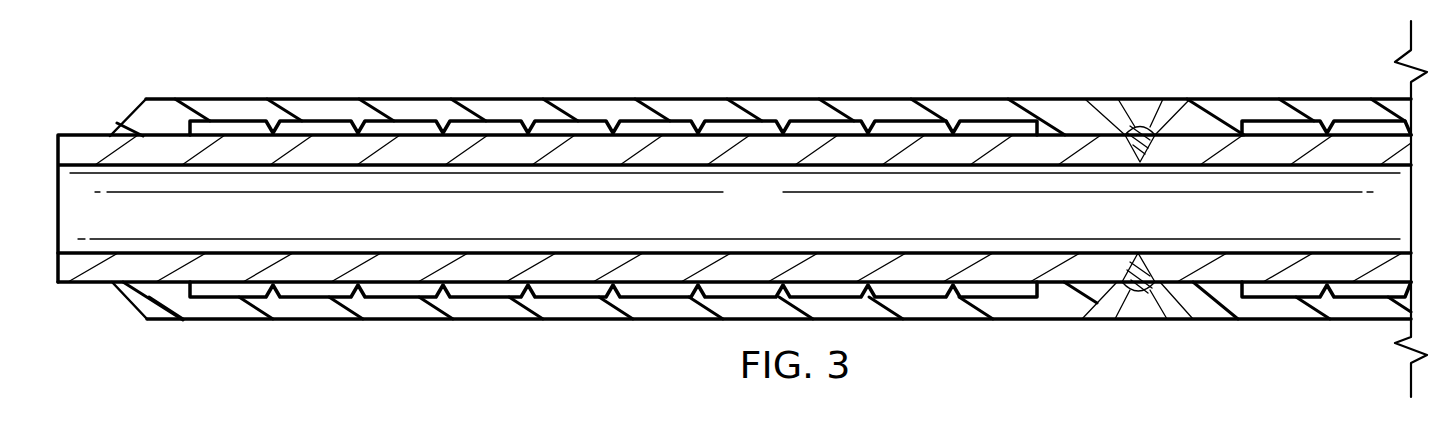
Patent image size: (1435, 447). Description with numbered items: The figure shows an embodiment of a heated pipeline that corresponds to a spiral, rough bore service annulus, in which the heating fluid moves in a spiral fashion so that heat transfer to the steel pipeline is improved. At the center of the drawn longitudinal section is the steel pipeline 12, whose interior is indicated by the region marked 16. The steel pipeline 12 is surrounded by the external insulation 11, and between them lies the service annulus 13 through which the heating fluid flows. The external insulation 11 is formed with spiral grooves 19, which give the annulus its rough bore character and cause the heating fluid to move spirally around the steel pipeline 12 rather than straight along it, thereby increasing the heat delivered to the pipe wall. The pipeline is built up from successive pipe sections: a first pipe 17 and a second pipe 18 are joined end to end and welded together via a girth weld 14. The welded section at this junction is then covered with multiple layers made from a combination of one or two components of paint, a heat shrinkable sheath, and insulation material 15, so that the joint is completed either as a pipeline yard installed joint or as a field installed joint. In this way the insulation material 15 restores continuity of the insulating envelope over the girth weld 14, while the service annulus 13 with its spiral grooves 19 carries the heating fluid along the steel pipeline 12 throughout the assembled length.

The external insulation 11 is at (402, 108).
The steel pipeline 12 is at (92, 283).
The service annulus 13 is at (400, 290).
The girth weld 14 is at (1140, 284).
The insulation material 15 is at (1142, 108).
The core layer 16 is at (738, 222).
The first pipe 17 is at (92, 140).
The second pipe 18 is at (227, 275).
The spiral grooves 19 is at (272, 128).